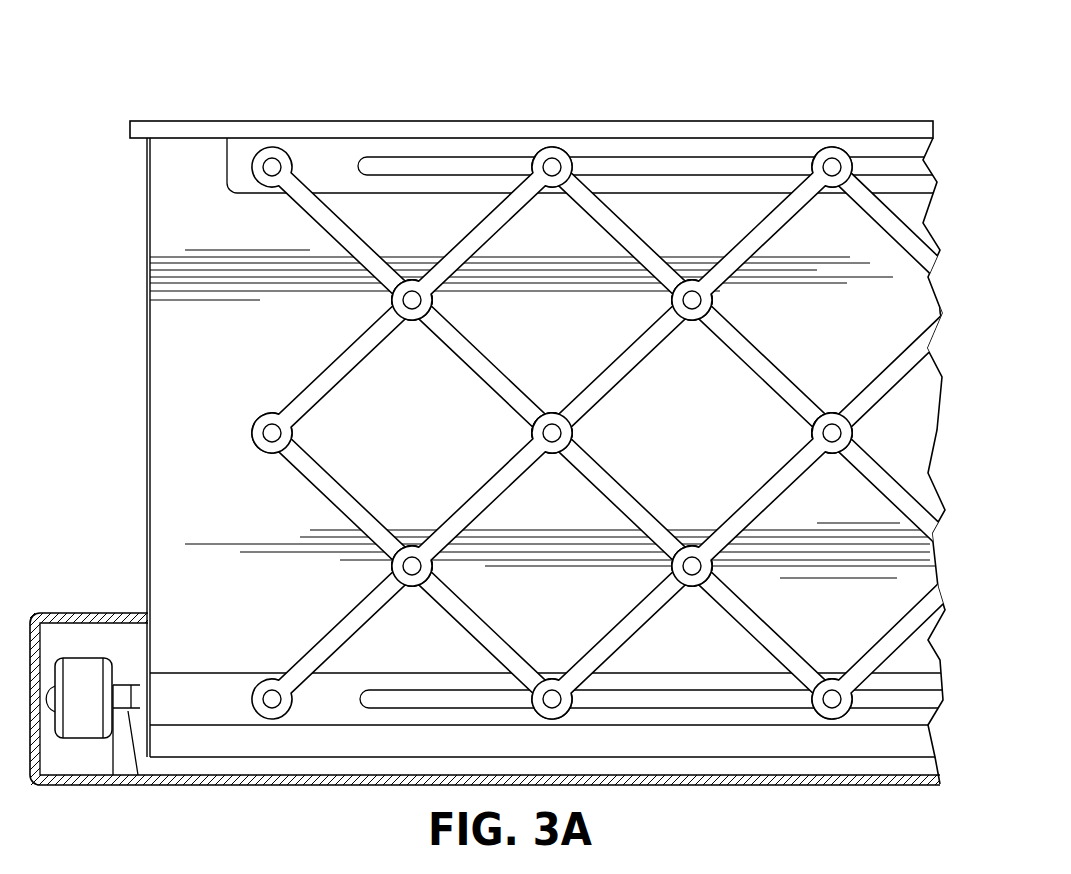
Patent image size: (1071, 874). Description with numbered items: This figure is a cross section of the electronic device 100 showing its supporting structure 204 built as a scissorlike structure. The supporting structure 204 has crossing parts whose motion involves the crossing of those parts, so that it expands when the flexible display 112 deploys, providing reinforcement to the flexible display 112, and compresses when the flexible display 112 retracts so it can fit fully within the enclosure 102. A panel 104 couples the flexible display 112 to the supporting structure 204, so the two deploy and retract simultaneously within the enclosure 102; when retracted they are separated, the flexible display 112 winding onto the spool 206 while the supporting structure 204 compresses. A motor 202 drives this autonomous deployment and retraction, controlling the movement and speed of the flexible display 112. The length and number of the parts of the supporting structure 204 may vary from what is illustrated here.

The electronic device 100 is at (740, 98).
The panel 104 is at (186, 120).
The flexible display 112 is at (146, 409).
The supporting structure 204 is at (324, 508).
The enclosure 102 is at (86, 612).
The motor 202 is at (85, 740).
The spool 206 is at (133, 688).